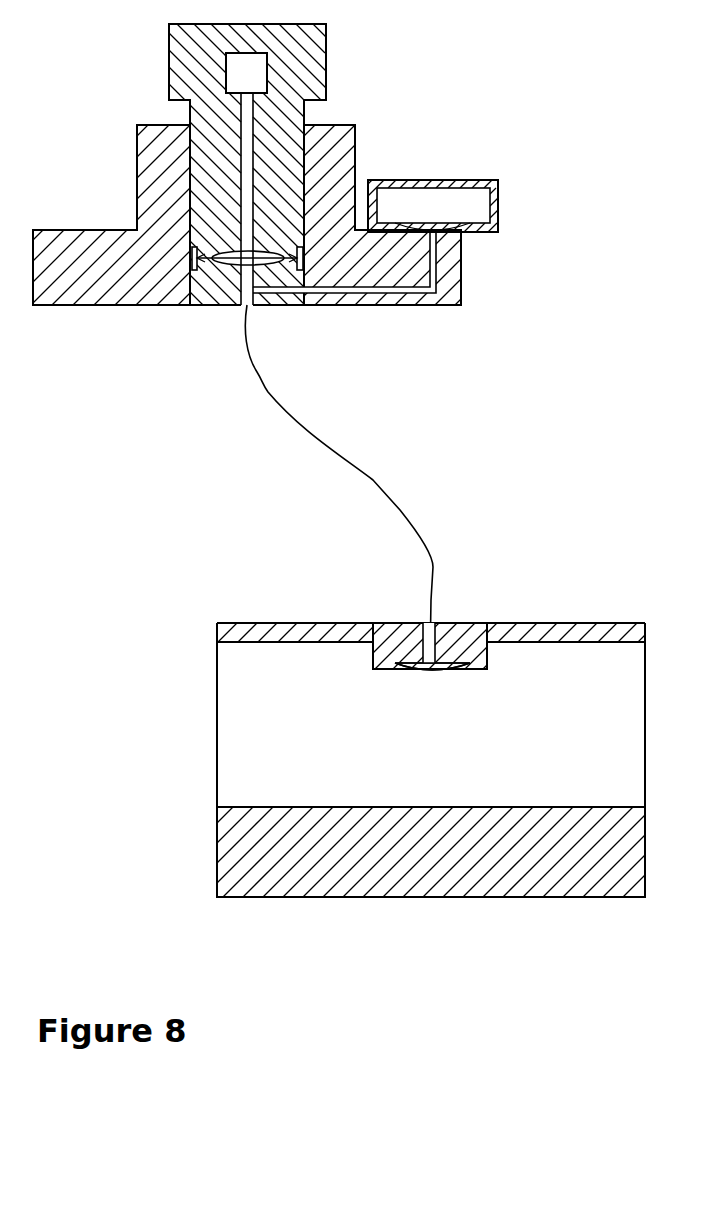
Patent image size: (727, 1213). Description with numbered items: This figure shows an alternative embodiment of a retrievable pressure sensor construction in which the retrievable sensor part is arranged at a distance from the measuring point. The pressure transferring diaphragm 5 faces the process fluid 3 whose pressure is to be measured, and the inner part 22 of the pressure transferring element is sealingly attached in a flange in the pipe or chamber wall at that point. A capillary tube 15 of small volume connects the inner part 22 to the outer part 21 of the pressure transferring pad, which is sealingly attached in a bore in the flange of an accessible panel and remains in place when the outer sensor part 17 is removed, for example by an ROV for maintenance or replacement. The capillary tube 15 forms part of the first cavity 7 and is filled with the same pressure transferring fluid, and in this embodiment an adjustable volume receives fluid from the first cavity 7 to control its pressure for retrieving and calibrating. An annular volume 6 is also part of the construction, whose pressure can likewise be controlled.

The process fluid 3 is at (561, 736).
The pressure transferring diaphragm 5 is at (423, 670).
The annular volume 6 is at (200, 262).
The first cavity 7 is at (247, 283).
The capillary tube 15 is at (380, 468).
The outer sensor part 17 is at (327, 62).
The outer part of the pressure transferring pad 21 is at (273, 305).
The inner part of the pressure transferring element 22 is at (453, 623).